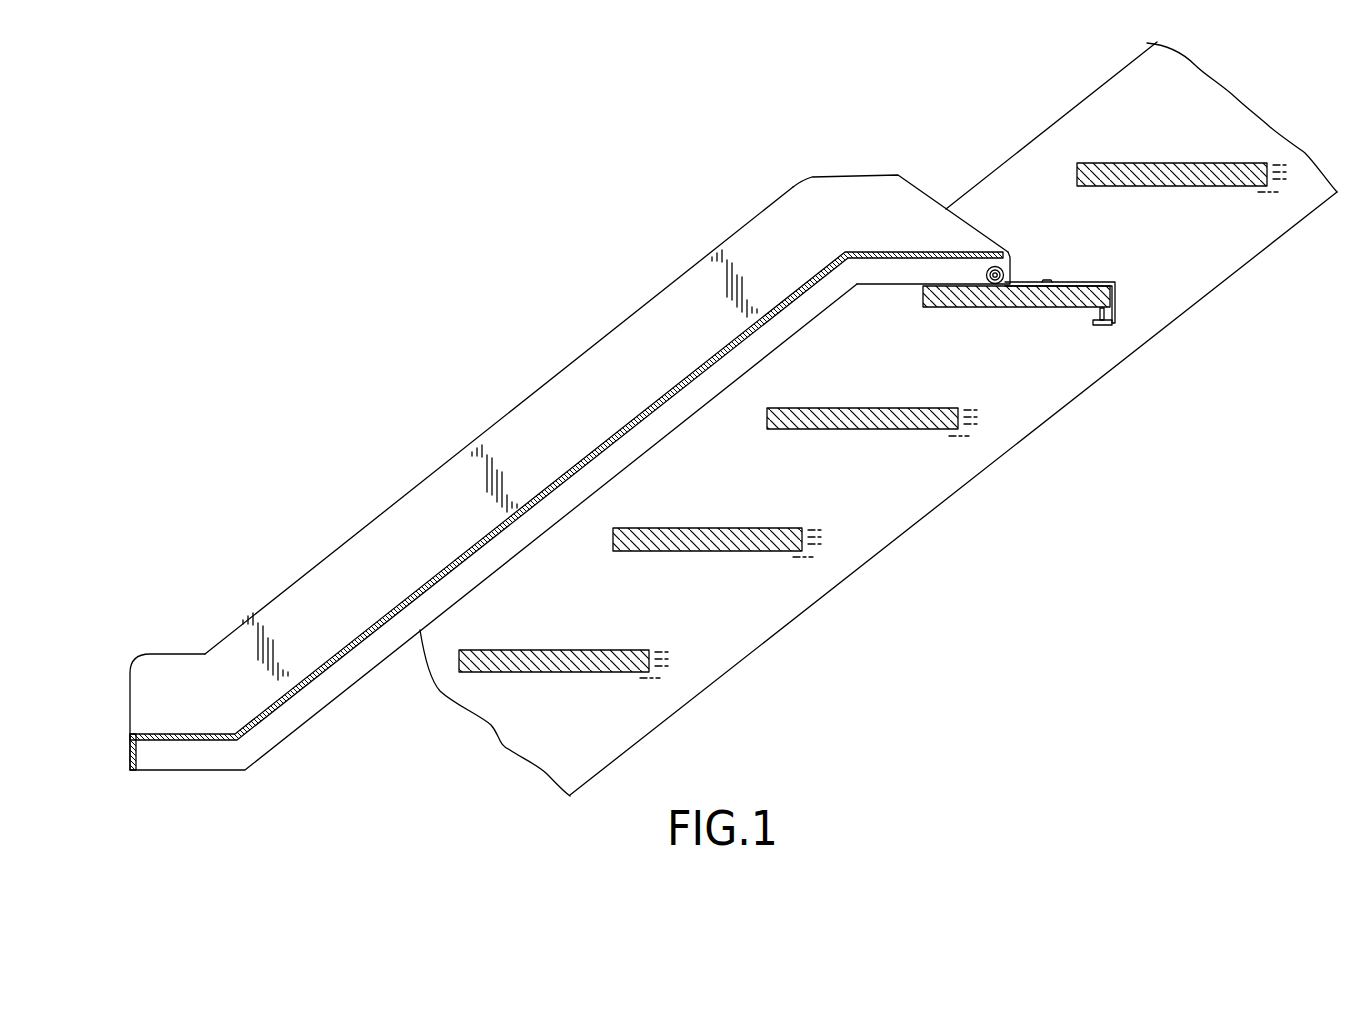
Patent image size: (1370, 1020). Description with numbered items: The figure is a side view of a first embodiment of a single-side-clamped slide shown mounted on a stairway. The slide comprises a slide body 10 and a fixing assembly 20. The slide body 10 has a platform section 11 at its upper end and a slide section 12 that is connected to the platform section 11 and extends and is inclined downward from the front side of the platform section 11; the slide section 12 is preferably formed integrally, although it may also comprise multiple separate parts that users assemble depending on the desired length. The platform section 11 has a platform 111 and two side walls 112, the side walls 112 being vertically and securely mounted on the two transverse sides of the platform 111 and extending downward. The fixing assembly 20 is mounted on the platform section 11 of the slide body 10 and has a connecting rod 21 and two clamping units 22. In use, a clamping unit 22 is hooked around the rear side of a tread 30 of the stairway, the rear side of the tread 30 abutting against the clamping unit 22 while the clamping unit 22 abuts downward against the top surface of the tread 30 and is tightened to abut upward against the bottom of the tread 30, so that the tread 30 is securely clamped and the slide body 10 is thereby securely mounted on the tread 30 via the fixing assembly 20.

The slide body 10 is at (436, 361).
The platform section 11 is at (938, 184).
The slide section 12 is at (593, 326).
The fixing assembly 20 is at (1150, 279).
The connecting rod 21 is at (1005, 270).
The clamping unit 22 is at (1095, 270).
The tread 30 is at (1007, 293).
The platform 111 is at (924, 248).
The side wall 112 is at (917, 272).